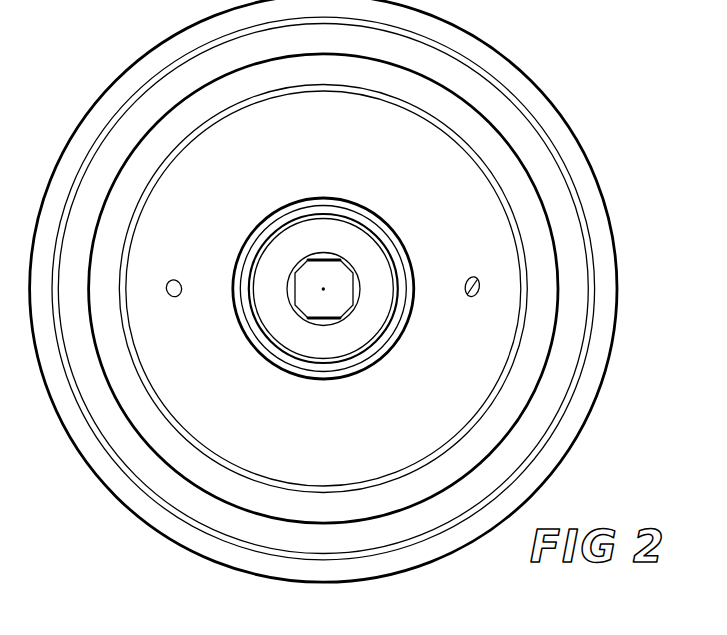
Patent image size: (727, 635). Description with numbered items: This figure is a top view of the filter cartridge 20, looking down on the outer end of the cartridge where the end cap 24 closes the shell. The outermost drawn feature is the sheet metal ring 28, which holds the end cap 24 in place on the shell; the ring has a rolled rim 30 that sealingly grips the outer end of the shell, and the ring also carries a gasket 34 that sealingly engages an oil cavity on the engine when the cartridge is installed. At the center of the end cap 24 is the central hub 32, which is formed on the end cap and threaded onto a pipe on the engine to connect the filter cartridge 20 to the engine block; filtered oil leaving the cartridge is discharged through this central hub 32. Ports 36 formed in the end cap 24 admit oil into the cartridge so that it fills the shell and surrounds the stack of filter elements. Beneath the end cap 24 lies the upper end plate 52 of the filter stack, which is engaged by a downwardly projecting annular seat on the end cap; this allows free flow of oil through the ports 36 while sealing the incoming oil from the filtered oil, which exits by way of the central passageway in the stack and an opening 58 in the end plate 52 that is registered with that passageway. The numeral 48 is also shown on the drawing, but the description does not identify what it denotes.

The filter cartridge 20 is at (613, 120).
The end cap 24 is at (402, 432).
The sheet metal ring 28 is at (488, 173).
The rolled rim 30 is at (587, 423).
The central hub 32 is at (340, 198).
The gasket 34 is at (533, 233).
The ports 36 is at (205, 283).
The bore 48 is at (323, 313).
The upper end plate 52 is at (342, 350).
The opening 58 is at (294, 290).